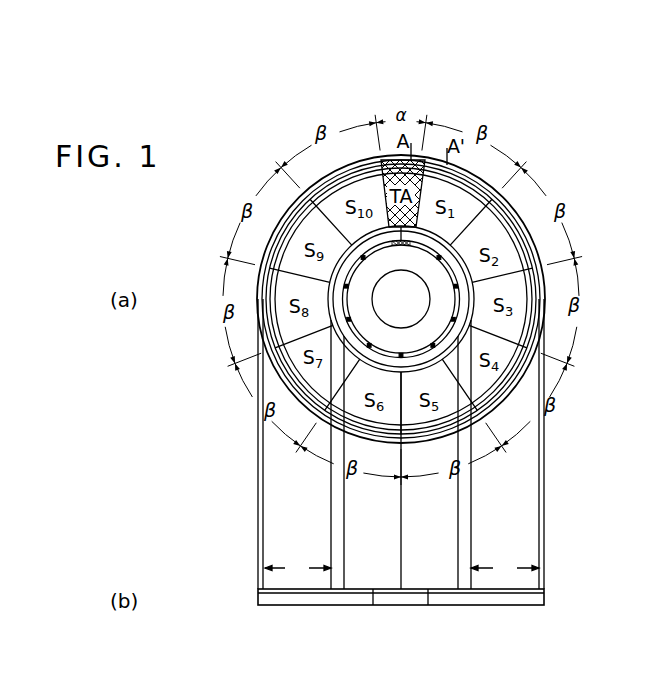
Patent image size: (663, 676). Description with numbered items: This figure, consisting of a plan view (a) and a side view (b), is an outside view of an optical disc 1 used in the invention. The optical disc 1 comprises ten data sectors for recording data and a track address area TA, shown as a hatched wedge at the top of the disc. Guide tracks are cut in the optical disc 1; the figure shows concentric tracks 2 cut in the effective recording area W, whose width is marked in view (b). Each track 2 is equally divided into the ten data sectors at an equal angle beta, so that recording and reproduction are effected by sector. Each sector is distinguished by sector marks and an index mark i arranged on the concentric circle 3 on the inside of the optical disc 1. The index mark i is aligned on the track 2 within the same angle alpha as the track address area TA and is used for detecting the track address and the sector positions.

The optical disc 1 is at (541, 246).
The track 2 is at (466, 250).
The concentric circle 3 is at (343, 298).